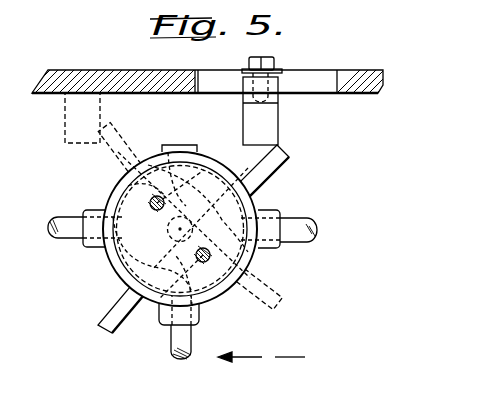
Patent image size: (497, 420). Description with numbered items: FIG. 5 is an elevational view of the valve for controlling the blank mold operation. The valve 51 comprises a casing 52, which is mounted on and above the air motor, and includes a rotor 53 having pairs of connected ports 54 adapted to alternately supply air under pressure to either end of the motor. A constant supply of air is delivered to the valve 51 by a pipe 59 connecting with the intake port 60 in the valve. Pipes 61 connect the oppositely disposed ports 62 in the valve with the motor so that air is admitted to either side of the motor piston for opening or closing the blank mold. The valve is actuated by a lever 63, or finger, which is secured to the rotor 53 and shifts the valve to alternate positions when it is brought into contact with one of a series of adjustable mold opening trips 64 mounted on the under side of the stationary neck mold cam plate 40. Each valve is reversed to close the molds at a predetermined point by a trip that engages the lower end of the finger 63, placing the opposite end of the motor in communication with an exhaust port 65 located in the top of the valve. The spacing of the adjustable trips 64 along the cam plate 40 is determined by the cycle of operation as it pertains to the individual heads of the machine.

The cam 40 is at (122, 64).
The valve 51 is at (114, 283).
The casing 52 is at (222, 290).
The rotor 53 is at (128, 186).
The connected ports 54 is at (190, 176).
The pipe 59 is at (177, 347).
The intake port 60 is at (160, 314).
The pipe 61 is at (66, 219).
The port 62 is at (84, 245).
The lever 63 is at (276, 165).
The adjustable mold opening trip 64 is at (268, 118).
The exhaust port 65 is at (177, 146).